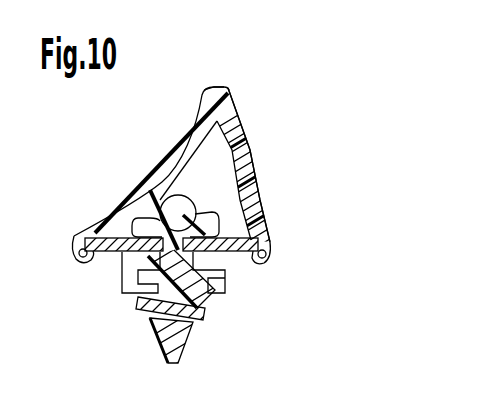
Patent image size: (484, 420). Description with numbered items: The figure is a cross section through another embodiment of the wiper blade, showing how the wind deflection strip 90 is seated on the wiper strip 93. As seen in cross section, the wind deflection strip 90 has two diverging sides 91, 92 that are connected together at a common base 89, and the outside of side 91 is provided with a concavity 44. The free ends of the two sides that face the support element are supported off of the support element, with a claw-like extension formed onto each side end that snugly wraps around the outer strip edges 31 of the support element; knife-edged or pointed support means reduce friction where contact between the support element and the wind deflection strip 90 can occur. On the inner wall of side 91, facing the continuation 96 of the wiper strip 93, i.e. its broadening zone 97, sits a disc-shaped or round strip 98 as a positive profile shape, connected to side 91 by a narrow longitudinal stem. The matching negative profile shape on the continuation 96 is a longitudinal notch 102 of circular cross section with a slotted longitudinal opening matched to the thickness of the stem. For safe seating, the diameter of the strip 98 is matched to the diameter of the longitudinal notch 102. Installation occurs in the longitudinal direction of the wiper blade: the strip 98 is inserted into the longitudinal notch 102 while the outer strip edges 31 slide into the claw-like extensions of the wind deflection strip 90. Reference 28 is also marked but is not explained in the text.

The base plate 28 is at (110, 252).
The outer strip edges 31 is at (82, 265).
The concavity 44 is at (152, 192).
The common base 89 is at (232, 92).
The wind deflection strip 90 is at (252, 147).
The side 91 is at (186, 142).
The side 92 is at (253, 172).
The wiper strip 93 is at (144, 324).
The continuation 96 is at (202, 288).
The broadening zone 97 is at (206, 212).
The strip 98 is at (160, 207).
The longitudinal notch 102 is at (246, 128).